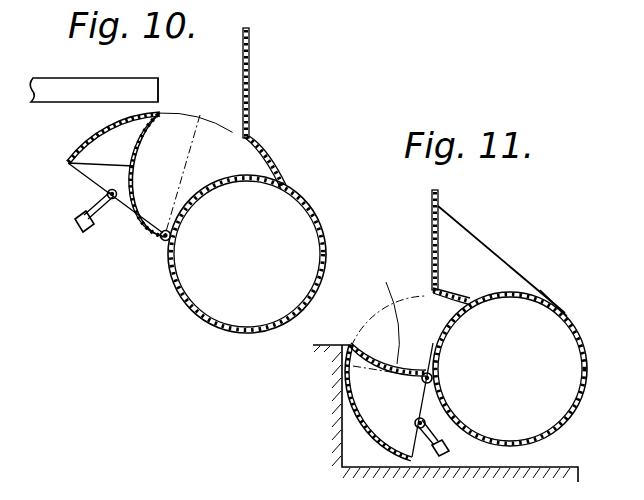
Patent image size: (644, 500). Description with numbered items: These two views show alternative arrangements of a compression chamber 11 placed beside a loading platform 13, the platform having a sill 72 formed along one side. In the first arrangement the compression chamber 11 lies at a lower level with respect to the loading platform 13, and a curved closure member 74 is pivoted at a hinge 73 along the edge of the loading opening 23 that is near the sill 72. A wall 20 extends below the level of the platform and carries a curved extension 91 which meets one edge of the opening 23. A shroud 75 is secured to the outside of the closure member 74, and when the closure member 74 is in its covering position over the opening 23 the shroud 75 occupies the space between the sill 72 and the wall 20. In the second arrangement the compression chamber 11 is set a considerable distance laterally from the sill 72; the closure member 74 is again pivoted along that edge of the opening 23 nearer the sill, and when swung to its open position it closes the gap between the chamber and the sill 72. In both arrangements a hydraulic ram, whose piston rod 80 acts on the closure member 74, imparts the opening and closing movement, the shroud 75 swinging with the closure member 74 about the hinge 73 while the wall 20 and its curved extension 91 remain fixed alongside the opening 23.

In FIG. 10, the compression chamber 11 is at (197, 318).
In FIG. 11, the compression chamber 11 is at (575, 322).
In FIG. 10, the loading platform 13 is at (68, 90).
In FIG. 10, the wall 20 is at (250, 78).
In FIG. 11, the wall 20 is at (438, 237).
In FIG. 10, the loading opening 23 is at (180, 204).
In FIG. 11, the loading opening 23 is at (448, 333).
In FIG. 10, the sill 72 is at (158, 88).
In FIG. 11, the sill 72 is at (342, 345).
In FIG. 10, the hinge 73 is at (162, 242).
In FIG. 11, the hinge 73 is at (427, 378).
In FIG. 10, the closure member 74 is at (68, 165).
In FIG. 11, the closure member 74 is at (394, 305).
In FIG. 10, the shroud 75 is at (78, 150).
In FIG. 11, the shroud 75 is at (360, 424).
In FIG. 10, the piston rod 80 is at (102, 219).
In FIG. 11, the piston rod 80 is at (427, 422).
In FIG. 10, the curved extension 91 is at (254, 146).
In FIG. 11, the curved extension 91 is at (457, 288).